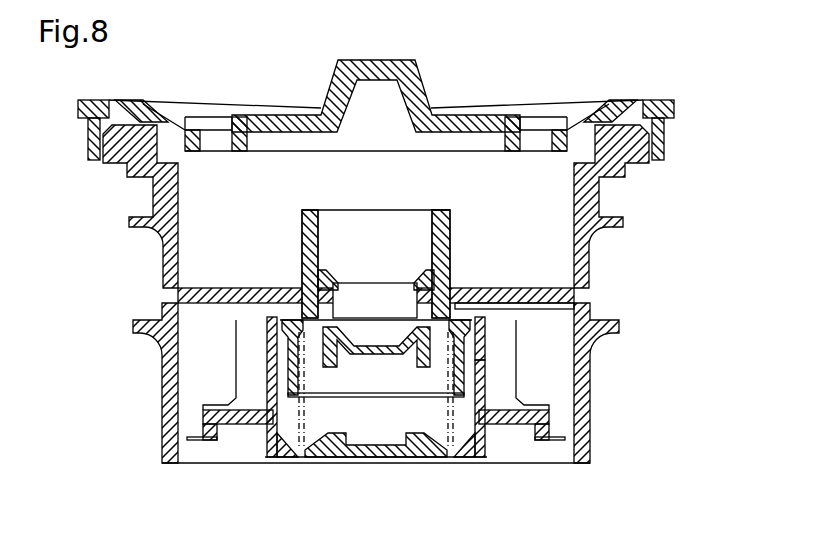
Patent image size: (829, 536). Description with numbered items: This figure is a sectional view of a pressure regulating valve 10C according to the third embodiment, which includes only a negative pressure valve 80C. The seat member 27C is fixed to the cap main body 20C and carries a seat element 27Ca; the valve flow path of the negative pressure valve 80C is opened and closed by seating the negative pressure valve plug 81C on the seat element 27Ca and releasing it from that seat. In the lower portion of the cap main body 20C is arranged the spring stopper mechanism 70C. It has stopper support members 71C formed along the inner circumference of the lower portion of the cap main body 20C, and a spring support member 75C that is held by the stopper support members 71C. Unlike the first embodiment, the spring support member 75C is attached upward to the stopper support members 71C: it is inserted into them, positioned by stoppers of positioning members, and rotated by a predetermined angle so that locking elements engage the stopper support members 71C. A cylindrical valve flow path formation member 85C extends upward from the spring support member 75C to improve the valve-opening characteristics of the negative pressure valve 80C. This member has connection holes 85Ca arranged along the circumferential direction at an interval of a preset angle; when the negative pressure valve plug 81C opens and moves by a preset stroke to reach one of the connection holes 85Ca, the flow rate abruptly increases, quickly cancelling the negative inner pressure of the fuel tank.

The pressure sensor device 10C is at (790, 85).
The cap main body 20C is at (590, 385).
The seat member 27C is at (470, 290).
The seat element 27Ca is at (500, 313).
The spring stopper mechanism 70C is at (710, 410).
The stopper support members 71C is at (553, 413).
The spring support member 75C is at (507, 420).
The negative pressure valve 80C is at (285, 372).
The negative pressure valve plug 81C is at (187, 302).
The valve flow path formation member 85C is at (483, 335).
The connection holes 85Ca is at (483, 377).